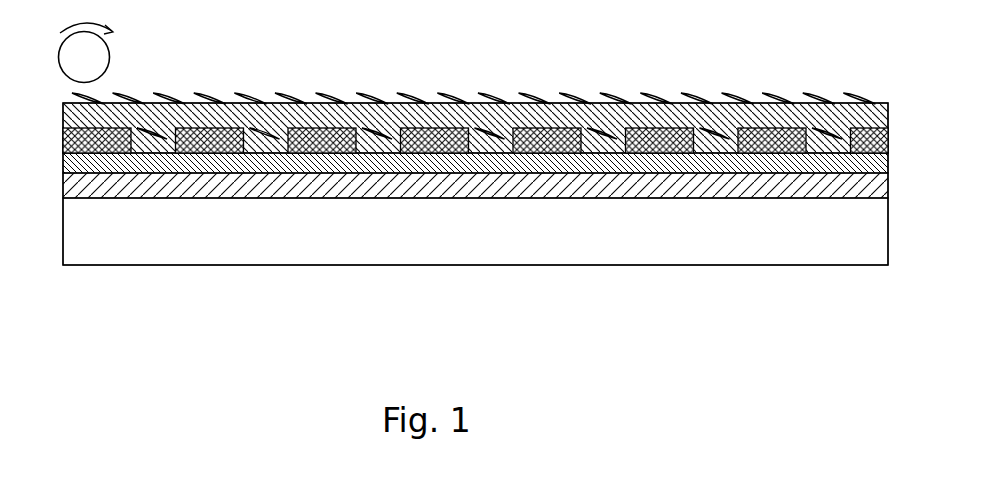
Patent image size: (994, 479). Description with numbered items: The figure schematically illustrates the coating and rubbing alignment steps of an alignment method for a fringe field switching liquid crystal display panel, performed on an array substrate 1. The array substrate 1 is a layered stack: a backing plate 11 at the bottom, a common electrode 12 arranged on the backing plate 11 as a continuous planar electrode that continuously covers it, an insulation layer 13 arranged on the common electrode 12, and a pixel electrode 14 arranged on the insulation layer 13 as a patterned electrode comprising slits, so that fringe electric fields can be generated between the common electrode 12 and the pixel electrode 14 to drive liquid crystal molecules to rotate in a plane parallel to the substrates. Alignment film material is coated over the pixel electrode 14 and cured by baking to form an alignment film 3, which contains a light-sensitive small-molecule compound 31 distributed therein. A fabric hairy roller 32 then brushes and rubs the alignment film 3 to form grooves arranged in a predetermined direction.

The array substrate 1 is at (475, 191).
The backing plate 11 is at (210, 217).
The common electrode 12 is at (335, 185).
The insulation layer 13 is at (445, 163).
The pixel electrode 14 is at (187, 312).
The alignment film 3 is at (810, 127).
The light-sensitive small-molecule compound 31 is at (732, 97).
The fabric hairy roller 32 is at (108, 49).